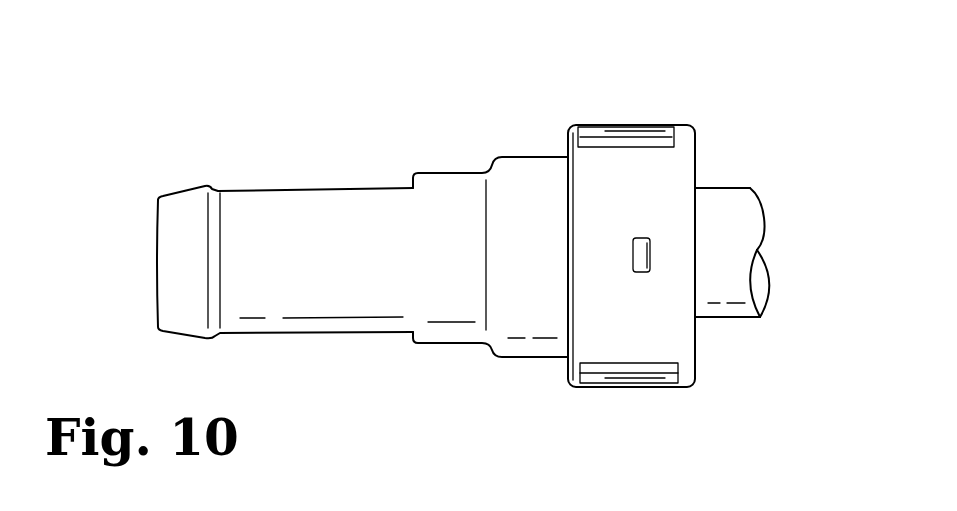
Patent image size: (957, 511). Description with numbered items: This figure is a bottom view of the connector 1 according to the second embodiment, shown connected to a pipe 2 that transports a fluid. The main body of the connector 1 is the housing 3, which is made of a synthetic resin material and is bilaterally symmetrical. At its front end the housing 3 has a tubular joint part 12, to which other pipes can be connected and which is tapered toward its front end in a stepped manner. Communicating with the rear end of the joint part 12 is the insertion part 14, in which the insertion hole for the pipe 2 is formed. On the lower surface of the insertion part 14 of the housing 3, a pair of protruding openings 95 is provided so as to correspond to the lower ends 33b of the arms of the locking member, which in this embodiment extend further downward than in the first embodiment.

The connector 1 is at (285, 130).
The pipe 2 is at (730, 182).
The housing 3 is at (525, 67).
The joint part 12 is at (362, 195).
The insertion part 14 is at (578, 125).
The lower ends 33b is at (598, 137).
The protruding openings 95 is at (663, 137).